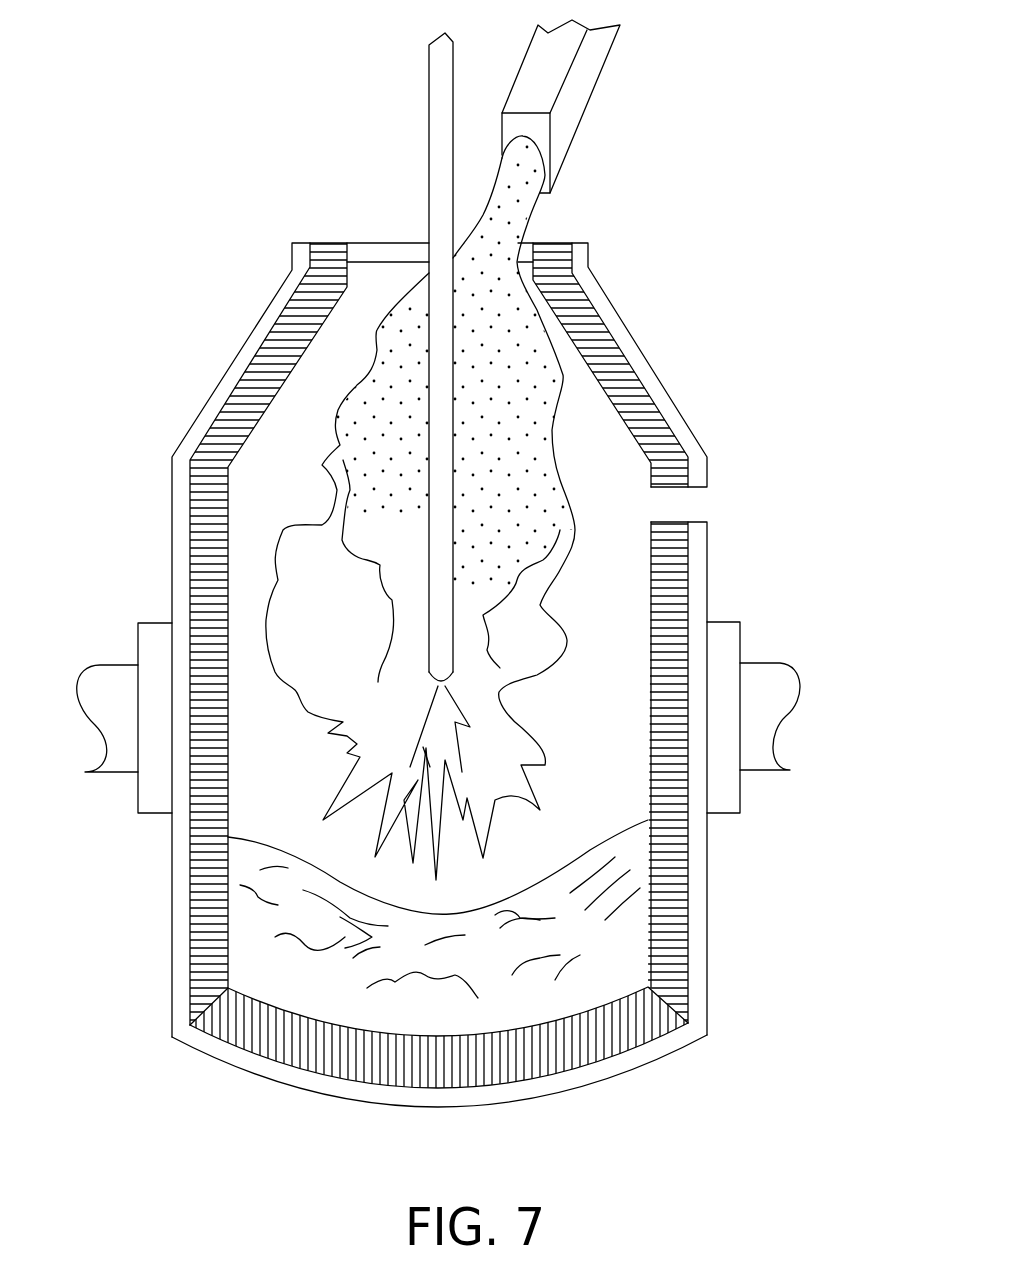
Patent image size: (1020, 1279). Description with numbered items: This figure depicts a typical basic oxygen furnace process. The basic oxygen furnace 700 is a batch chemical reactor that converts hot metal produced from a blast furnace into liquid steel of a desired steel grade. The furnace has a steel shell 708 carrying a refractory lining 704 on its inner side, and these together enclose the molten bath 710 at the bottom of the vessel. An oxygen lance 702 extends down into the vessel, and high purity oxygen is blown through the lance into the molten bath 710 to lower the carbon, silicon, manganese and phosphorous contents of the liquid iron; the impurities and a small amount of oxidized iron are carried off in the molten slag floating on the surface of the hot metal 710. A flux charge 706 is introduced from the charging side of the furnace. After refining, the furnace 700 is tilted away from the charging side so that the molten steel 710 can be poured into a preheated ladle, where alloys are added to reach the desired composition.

The basic oxygen furnace 700 is at (765, 82).
The oxygen lance 702 is at (428, 192).
The refractory lining 704 is at (266, 362).
The flux charge 706 is at (530, 220).
The steel shell 708 is at (642, 363).
The molten bath 710 is at (633, 963).